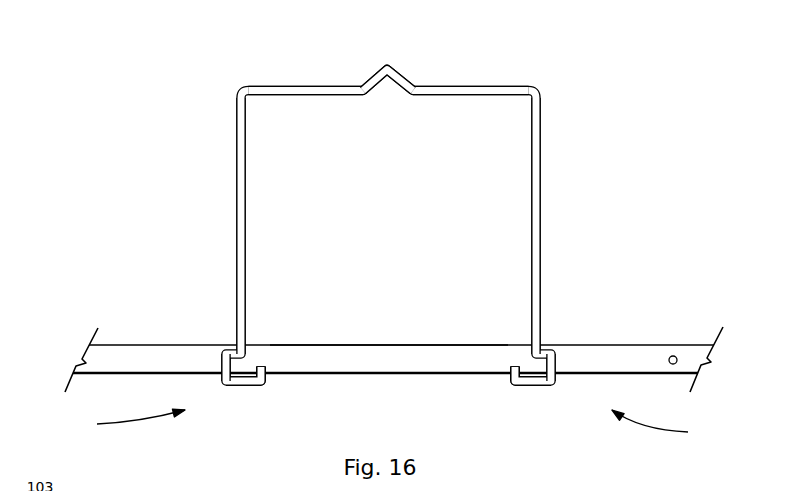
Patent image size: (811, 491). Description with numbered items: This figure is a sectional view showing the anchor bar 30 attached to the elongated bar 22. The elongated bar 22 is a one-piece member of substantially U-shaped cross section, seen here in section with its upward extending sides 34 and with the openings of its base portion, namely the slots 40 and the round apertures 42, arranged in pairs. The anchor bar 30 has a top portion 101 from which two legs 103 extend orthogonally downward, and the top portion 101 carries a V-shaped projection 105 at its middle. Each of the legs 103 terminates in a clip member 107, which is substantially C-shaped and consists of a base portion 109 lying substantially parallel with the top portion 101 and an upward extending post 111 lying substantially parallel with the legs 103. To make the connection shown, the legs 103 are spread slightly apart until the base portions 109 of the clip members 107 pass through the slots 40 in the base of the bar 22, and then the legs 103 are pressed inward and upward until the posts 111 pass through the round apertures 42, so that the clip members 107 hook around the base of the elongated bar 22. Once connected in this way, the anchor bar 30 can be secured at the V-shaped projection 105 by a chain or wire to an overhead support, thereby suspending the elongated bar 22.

The elongated bar 22 is at (675, 345).
The anchor bar 30 is at (542, 130).
The upward extending sides 34 is at (380, 368).
The slots 40 is at (217, 350).
The round apertures 42 is at (265, 386).
The top portion 101 is at (497, 87).
The legs 103 is at (236, 203).
The V-shaped projection 105 is at (388, 63).
The clip member 107 is at (391, 426).
The base portion 109 is at (243, 386).
The upward extending post 111 is at (263, 360).